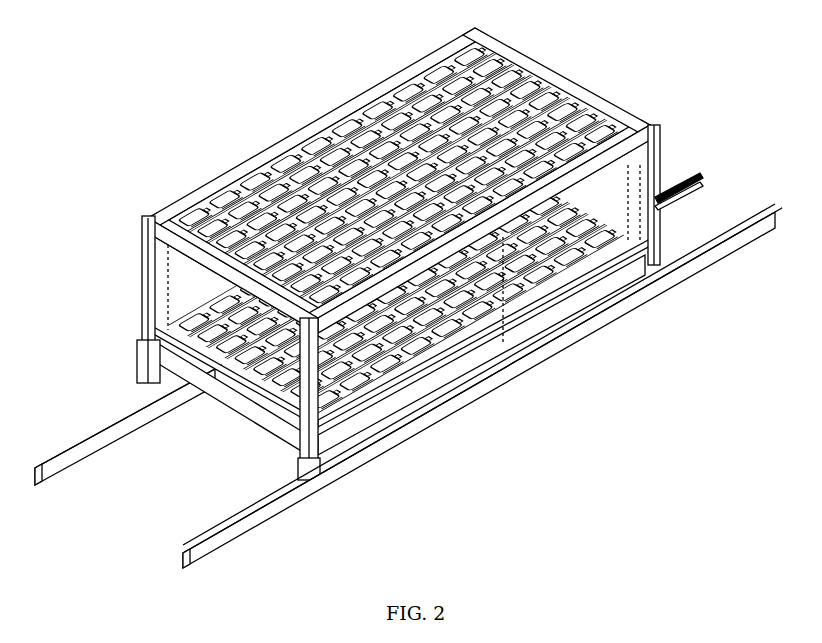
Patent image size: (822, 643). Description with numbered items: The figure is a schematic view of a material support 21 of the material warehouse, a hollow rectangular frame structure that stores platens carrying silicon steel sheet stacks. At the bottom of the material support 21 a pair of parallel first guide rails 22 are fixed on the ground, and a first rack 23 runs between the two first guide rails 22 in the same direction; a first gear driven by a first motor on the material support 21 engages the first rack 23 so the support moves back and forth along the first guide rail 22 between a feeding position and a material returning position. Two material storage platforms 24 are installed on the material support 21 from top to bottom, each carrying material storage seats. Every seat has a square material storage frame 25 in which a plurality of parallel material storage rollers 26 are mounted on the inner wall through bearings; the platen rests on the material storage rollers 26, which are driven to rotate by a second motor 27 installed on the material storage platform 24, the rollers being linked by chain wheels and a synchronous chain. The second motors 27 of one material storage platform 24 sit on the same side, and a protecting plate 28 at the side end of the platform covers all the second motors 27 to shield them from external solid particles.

The material support 21 is at (641, 207).
The first guide rail 22 is at (720, 240).
The first rack 23 is at (660, 197).
The material storage platform 24 is at (262, 412).
The material storage frame 25 is at (190, 200).
The material storage roller 26 is at (233, 163).
The second motor 27 is at (267, 432).
The protecting plate 28 is at (417, 367).